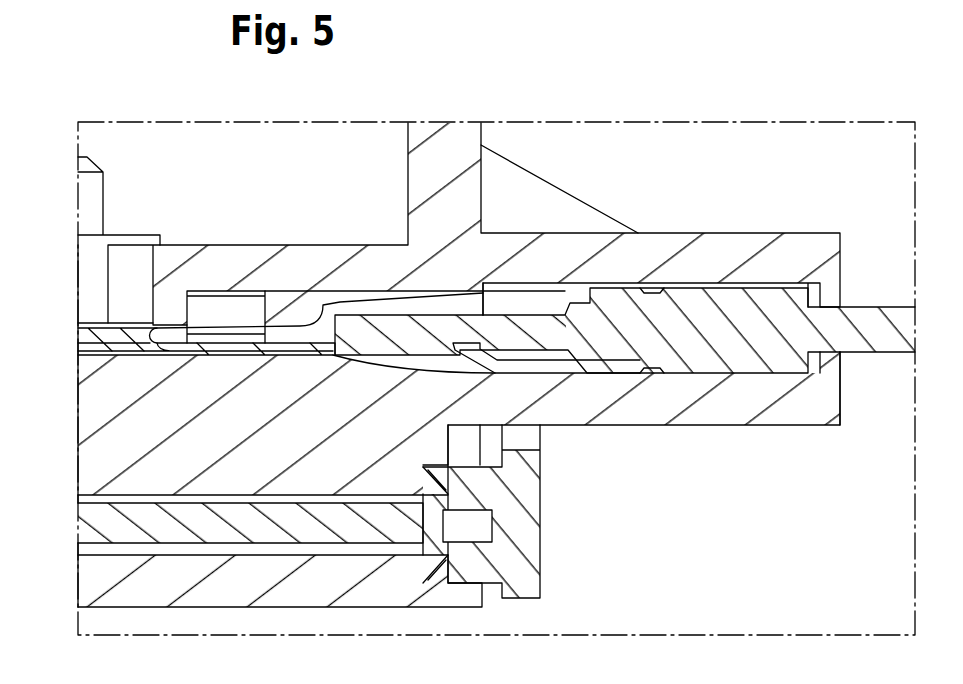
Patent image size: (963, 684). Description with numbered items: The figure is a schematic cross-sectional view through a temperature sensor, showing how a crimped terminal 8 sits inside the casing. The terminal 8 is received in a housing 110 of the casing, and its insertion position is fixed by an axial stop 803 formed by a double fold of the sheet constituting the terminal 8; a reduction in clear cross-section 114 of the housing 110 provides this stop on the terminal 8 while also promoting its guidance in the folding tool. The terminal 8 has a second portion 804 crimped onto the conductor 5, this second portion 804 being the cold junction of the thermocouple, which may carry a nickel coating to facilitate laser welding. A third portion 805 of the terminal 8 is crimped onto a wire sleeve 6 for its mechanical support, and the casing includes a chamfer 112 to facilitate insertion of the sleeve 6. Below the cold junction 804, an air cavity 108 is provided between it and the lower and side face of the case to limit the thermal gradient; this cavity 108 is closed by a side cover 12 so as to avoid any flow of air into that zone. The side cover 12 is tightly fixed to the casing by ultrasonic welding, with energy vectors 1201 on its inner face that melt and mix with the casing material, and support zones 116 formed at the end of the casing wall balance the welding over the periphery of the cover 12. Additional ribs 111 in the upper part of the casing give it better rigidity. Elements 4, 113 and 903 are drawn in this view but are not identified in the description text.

The terminal contact portion 4 is at (543, 308).
The conductor 5 is at (388, 322).
The wire sleeve seal 6 is at (690, 312).
The terminal 8 is at (128, 308).
The side cover 12 is at (527, 523).
The air cavity 108 is at (122, 546).
The housing 110 is at (684, 385).
The additional ribs 111 is at (518, 208).
The chamfer 112 is at (838, 382).
The housing 113 is at (175, 275).
The reduction in clear cross-section 114 is at (153, 362).
The support zones 116 is at (470, 567).
The axial stop 803 is at (225, 325).
The second portion 804 is at (385, 358).
The third portion 805 is at (603, 378).
The wire 903 is at (92, 357).
The energy vectors 1201 is at (440, 586).